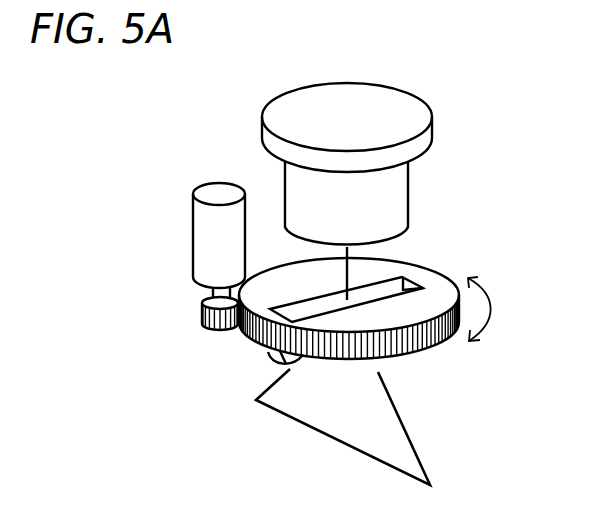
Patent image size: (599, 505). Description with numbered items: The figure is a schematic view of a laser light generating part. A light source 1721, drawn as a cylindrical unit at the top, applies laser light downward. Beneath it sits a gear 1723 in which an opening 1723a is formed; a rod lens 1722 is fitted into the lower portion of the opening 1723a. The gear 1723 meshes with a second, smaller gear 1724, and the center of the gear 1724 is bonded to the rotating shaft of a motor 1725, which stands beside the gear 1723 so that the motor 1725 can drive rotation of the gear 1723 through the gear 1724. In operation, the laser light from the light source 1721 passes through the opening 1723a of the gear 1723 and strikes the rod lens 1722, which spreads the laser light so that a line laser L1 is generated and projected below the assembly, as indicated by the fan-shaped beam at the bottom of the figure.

The light source 1721 is at (432, 130).
The rod lens 1722 is at (270, 355).
The gear 1723 is at (443, 342).
The opening 1723a is at (407, 290).
The gear 1724 is at (202, 310).
The motor 1725 is at (193, 220).
The line laser L1 is at (405, 425).